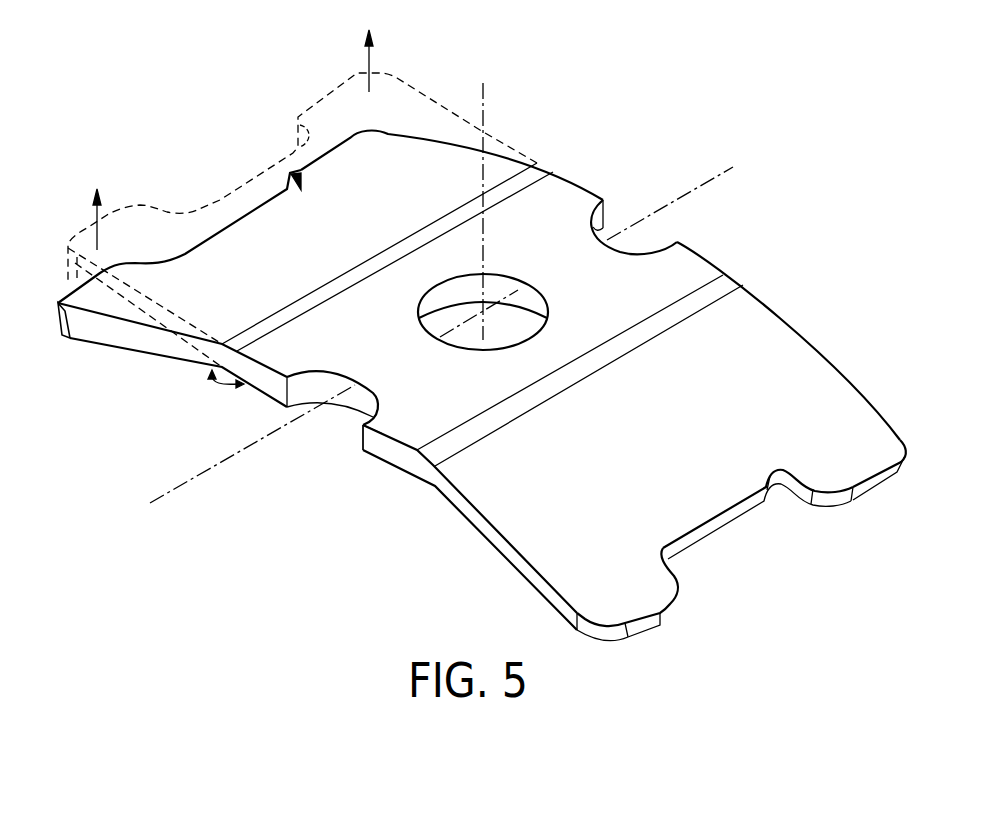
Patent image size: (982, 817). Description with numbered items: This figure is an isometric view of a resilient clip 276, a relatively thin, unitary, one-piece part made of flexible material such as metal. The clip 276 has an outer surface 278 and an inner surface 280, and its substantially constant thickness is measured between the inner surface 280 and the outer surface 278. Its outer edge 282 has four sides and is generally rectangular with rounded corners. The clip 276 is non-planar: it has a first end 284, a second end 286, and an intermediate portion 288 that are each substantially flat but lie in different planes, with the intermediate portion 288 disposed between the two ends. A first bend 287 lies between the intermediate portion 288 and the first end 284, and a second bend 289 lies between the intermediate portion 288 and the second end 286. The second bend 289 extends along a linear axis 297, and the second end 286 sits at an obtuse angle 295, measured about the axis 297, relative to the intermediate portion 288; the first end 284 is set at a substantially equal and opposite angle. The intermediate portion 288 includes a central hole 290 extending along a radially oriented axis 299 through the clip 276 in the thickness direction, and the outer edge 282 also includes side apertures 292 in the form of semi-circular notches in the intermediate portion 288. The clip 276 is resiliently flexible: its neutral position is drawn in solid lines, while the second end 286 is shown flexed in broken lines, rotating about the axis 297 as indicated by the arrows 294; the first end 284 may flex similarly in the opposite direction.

The resilient clip 276 is at (752, 160).
The outer surface 278 is at (787, 343).
The inner surface 280 is at (434, 495).
The outer edge 282 is at (260, 380).
The first end 284 is at (712, 498).
The second end 286 is at (252, 233).
The first bend 287 is at (620, 343).
The intermediate portion 288 is at (393, 435).
The second bend 289 is at (368, 265).
The central hole 290 is at (420, 315).
The side apertures 292 is at (607, 217).
The arrows 294 is at (96, 210).
The obtuse angle 295 is at (220, 388).
The linear axis 297 is at (197, 477).
The axis 299 is at (484, 102).